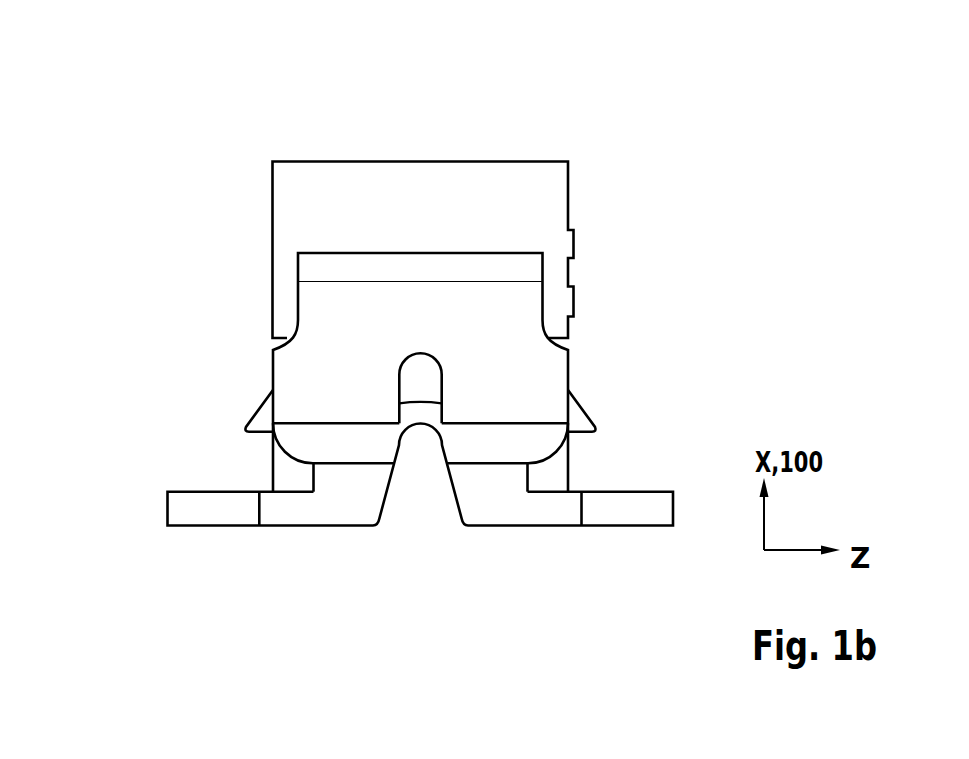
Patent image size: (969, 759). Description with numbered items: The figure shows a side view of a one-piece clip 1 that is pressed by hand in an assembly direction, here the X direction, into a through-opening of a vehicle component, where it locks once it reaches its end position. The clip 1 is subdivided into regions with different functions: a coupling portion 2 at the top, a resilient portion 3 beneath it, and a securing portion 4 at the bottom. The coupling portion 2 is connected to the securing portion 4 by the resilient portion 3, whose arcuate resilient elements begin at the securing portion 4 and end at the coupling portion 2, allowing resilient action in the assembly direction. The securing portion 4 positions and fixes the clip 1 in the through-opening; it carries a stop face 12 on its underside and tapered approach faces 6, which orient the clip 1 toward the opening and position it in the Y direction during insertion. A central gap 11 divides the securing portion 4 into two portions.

The clip 1 is at (186, 116).
The coupling portion 2 is at (600, 192).
The resilient portion 3 is at (600, 365).
The securing portion 4 is at (600, 470).
The approach face 6 is at (351, 455).
The gap 11 is at (422, 537).
The stop face 12 is at (182, 508).